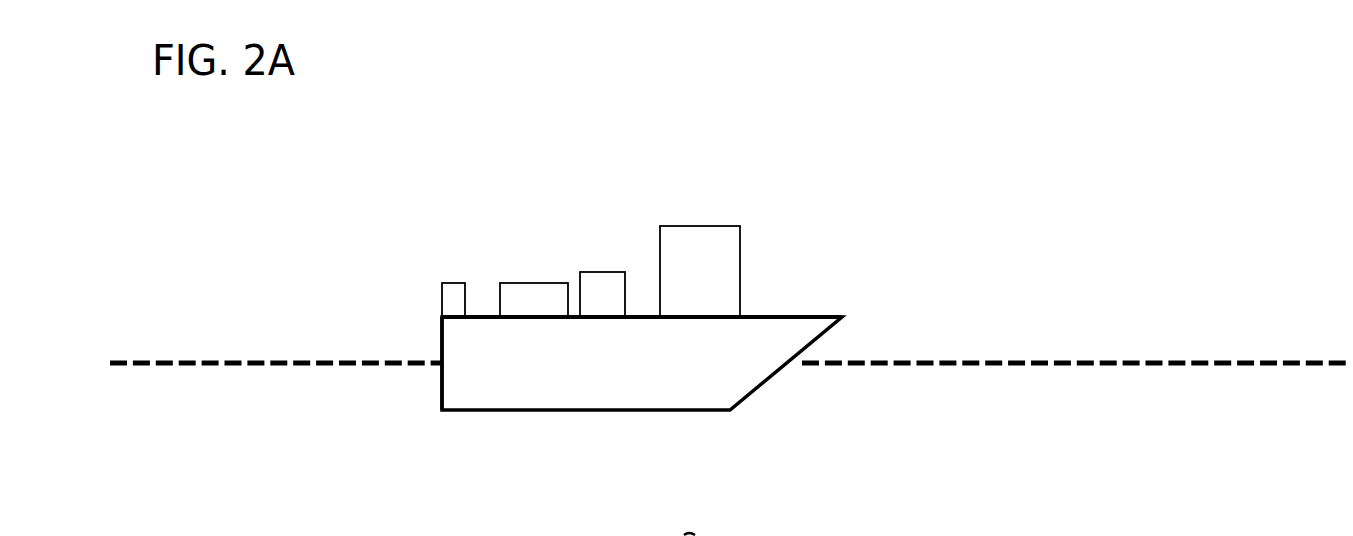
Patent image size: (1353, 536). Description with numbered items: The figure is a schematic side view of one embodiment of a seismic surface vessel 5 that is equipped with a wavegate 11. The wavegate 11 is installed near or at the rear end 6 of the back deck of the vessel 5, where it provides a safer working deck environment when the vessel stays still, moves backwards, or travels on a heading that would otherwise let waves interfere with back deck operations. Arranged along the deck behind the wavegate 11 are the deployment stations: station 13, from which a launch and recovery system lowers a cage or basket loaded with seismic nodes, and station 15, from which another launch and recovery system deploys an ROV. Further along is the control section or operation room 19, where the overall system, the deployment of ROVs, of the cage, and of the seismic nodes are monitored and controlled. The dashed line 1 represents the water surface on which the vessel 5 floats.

The water surface 1 is at (192, 365).
The surface vessel 5 is at (820, 320).
The rear end 6 is at (442, 328).
The wavegate 11 is at (453, 283).
The station 13 is at (547, 283).
The station 15 is at (603, 272).
The control section/operation room 19 is at (704, 232).